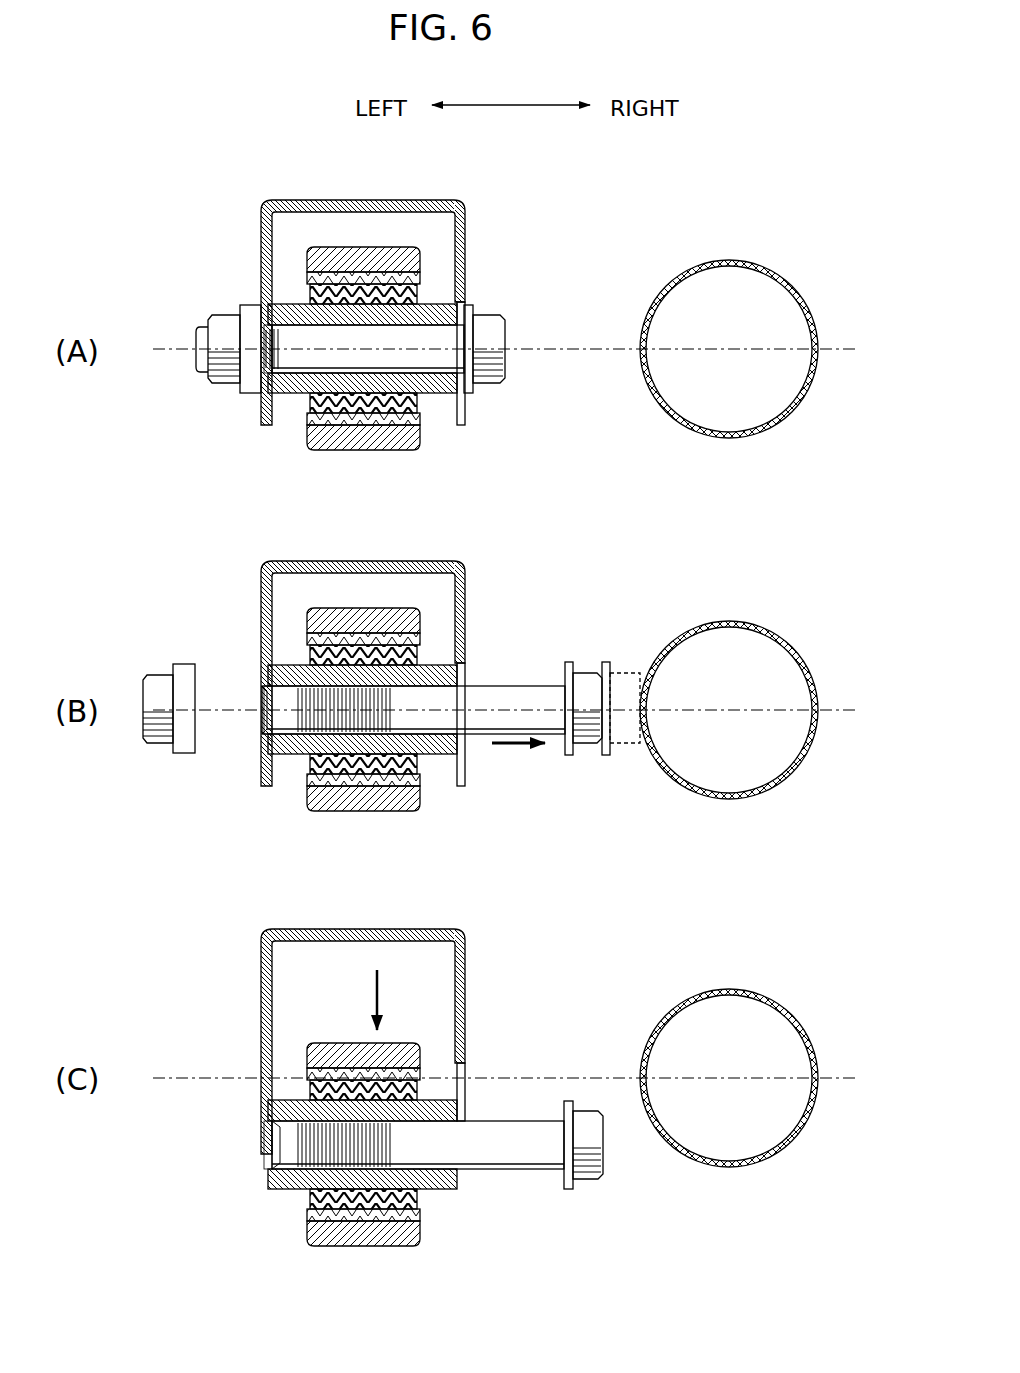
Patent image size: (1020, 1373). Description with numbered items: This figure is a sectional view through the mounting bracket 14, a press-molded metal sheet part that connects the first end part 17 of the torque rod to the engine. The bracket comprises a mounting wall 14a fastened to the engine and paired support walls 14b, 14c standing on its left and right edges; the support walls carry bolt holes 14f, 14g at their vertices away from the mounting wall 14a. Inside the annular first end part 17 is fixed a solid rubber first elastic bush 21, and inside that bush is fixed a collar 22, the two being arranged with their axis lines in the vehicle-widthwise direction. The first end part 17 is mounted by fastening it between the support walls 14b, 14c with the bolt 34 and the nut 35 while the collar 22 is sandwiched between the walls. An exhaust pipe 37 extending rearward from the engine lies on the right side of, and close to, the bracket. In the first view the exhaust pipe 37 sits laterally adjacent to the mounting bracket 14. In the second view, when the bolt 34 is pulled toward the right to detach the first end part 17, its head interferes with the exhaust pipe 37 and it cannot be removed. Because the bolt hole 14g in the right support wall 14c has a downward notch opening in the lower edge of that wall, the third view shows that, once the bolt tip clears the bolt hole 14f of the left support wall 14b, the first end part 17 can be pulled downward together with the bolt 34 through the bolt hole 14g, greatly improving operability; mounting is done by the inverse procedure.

The mounting bracket 14 is at (373, 666).
The mounting wall 14a is at (390, 198).
The support wall 14b is at (262, 262).
The support wall 14c is at (466, 262).
The bolt hole 14f is at (266, 368).
The bolt hole 14g is at (466, 392).
The first end part 17 is at (352, 774).
The first elastic bush 21 is at (375, 432).
The collar 22 is at (437, 396).
The bolt 34 is at (487, 336).
The nut 35 is at (225, 328).
The exhaust pipe 37 is at (786, 278).